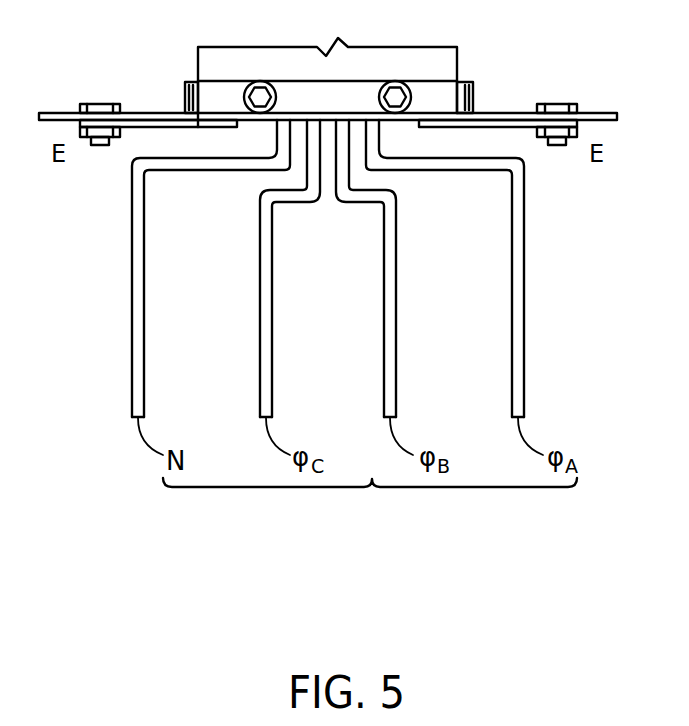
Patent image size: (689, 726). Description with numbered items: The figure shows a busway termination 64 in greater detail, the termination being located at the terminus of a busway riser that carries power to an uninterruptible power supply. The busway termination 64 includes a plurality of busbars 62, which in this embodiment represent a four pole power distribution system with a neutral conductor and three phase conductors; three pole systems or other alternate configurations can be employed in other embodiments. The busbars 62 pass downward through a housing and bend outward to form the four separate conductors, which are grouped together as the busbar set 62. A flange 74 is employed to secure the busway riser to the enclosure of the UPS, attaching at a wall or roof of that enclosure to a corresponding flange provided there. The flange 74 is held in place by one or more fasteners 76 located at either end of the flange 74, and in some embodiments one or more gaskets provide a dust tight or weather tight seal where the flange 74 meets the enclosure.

The busbar 62 is at (370, 503).
The busway termination 64 is at (569, 223).
The flange 74 is at (513, 113).
The fastener 76 is at (99, 103).